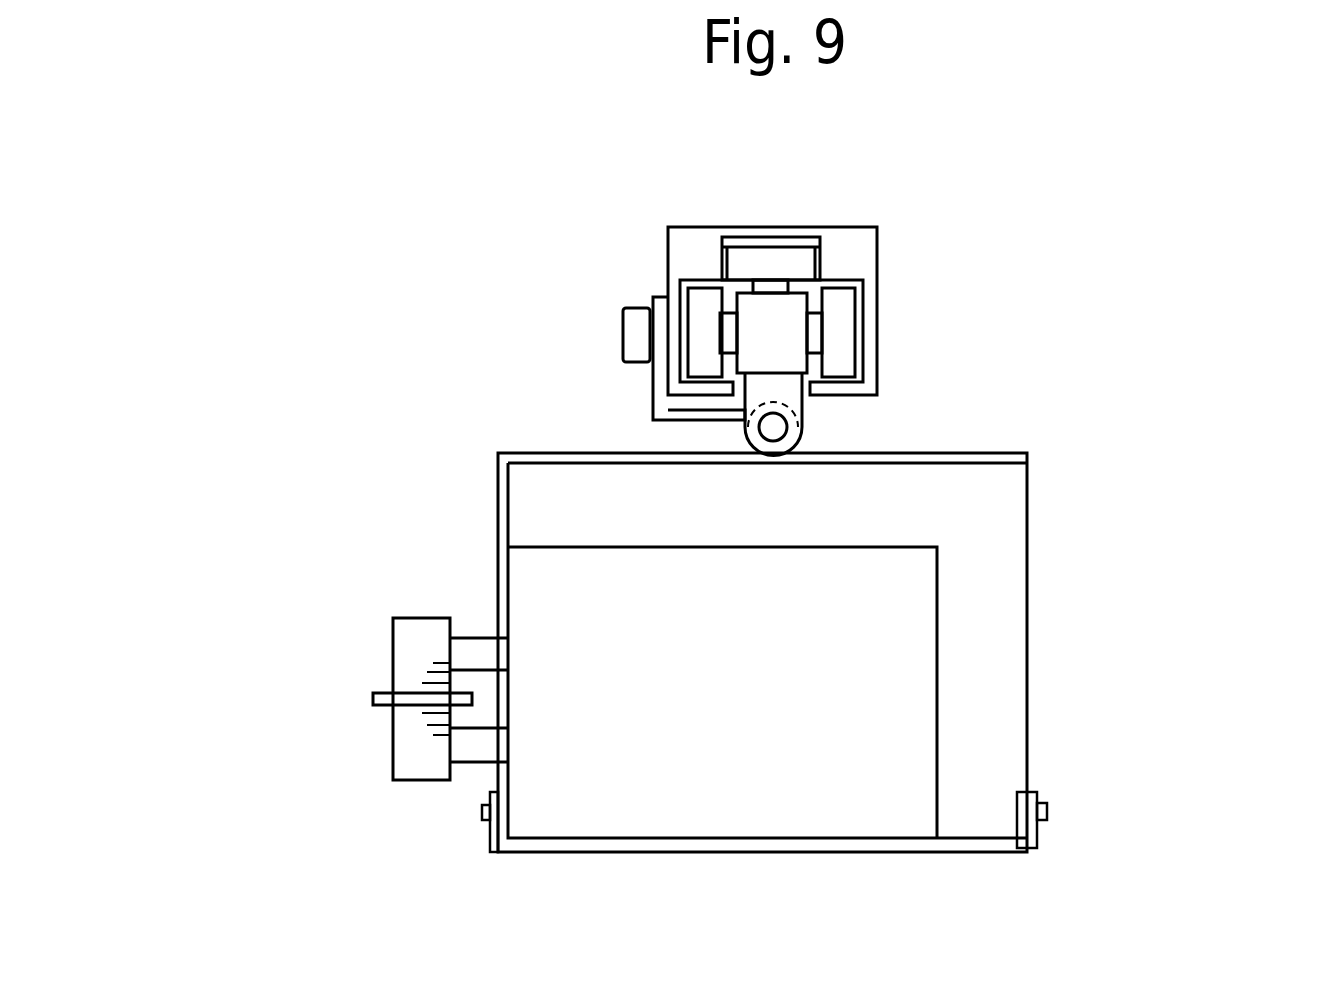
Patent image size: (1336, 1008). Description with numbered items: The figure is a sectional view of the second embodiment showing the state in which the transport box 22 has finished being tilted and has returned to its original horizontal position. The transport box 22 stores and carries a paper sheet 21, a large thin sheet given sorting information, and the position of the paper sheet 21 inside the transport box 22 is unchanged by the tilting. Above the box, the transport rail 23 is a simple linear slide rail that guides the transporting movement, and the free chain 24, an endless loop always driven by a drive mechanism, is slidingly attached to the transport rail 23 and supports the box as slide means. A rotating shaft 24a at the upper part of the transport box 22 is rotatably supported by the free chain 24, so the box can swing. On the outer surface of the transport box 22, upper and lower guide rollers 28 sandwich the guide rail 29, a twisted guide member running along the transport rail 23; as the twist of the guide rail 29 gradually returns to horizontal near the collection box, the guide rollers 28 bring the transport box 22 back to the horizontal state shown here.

The paper sheet 21 is at (937, 615).
The transport box 22 is at (498, 493).
The transport rail 23 is at (877, 287).
The free chain 24 is at (688, 300).
The rotating shaft 24a is at (787, 424).
The guide roller 28 is at (418, 845).
The guide rail 29 is at (373, 700).